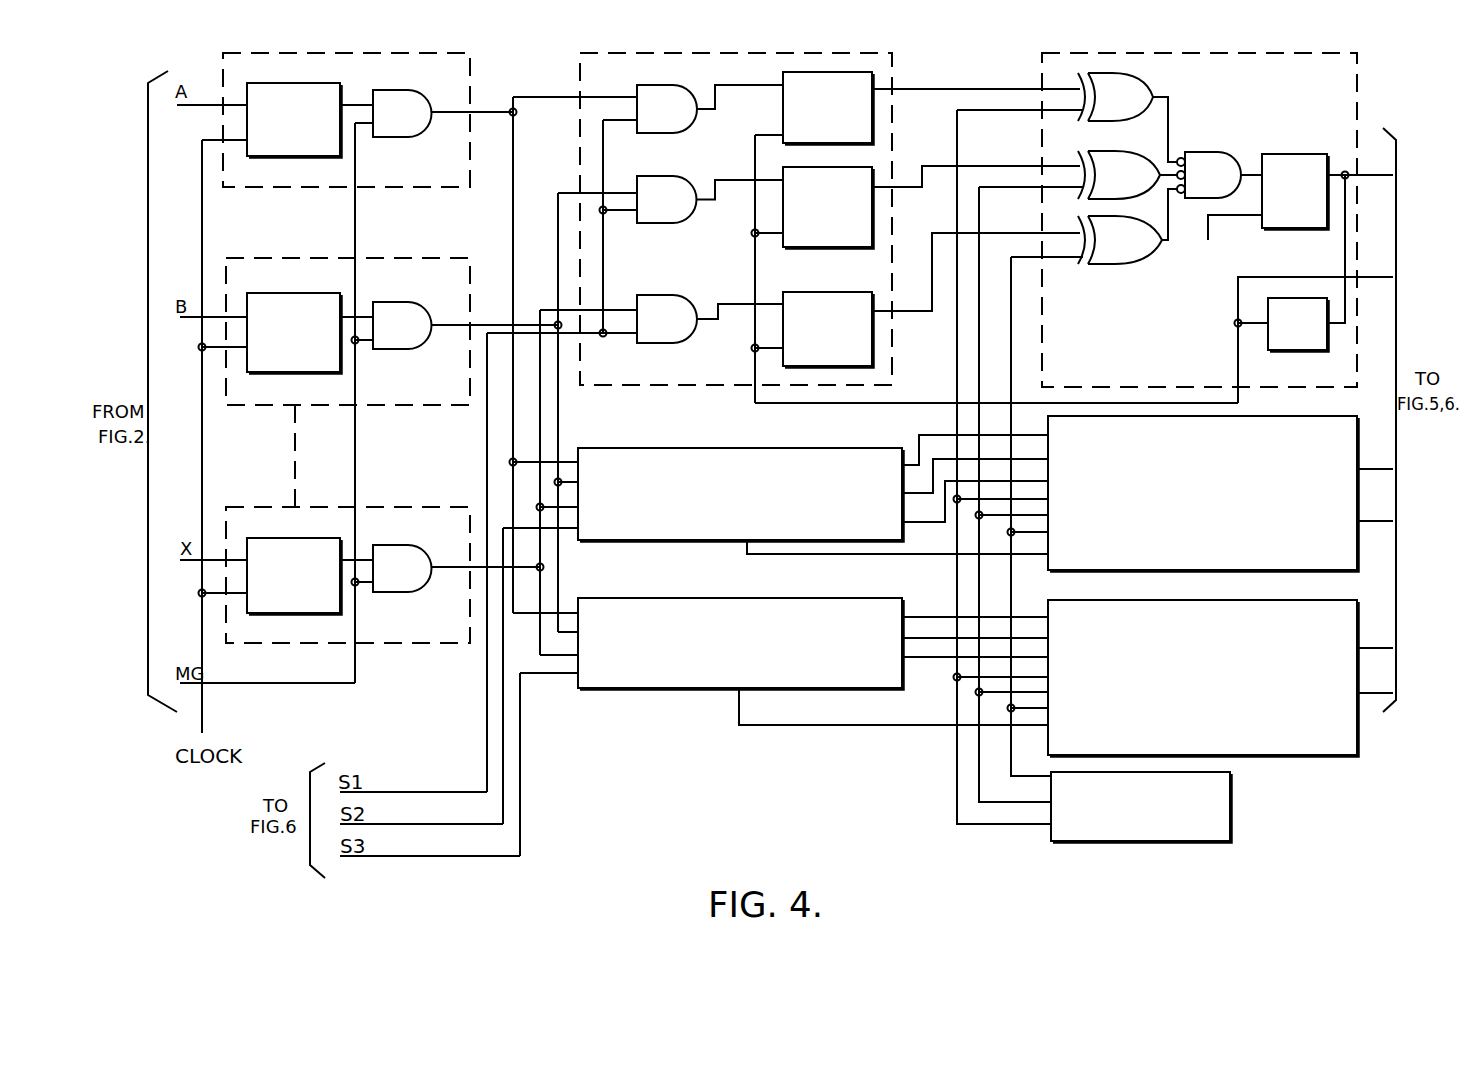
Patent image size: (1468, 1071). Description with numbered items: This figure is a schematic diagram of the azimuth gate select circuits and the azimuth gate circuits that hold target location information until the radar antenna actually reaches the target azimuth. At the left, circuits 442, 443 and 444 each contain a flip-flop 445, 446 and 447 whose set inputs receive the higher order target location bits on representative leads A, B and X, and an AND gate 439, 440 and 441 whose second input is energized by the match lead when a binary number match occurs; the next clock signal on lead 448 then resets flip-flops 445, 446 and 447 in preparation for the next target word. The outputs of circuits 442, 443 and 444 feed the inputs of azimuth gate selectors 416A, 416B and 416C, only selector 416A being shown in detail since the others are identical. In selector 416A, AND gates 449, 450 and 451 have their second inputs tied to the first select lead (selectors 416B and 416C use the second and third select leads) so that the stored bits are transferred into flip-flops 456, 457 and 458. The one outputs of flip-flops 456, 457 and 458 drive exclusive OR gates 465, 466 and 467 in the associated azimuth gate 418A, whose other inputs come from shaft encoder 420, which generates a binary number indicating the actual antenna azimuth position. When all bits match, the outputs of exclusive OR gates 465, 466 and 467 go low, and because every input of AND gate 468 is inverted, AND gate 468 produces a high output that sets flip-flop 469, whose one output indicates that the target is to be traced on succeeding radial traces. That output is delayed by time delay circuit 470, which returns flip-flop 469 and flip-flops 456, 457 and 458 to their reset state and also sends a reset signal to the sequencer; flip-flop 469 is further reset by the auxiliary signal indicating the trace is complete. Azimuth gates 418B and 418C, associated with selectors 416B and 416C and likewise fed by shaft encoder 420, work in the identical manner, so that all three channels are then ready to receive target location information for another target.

The azimuth gate selector 416A is at (862, 53).
The azimuth gate selector 416B is at (782, 448).
The azimuth gate selector 416C is at (792, 597).
The azimuth gate 418A is at (1260, 52).
The azimuth gate 418B is at (1260, 415).
The azimuth gate 418C is at (1253, 597).
The shaft encoder 420 is at (1231, 794).
The AND gate 439 is at (400, 90).
The AND gate 440 is at (393, 302).
The AND gate 441 is at (403, 545).
The circuit 442 is at (418, 52).
The circuit 443 is at (403, 257).
The circuit 444 is at (398, 507).
The flip-flop 445 is at (295, 83).
The flip-flop 446 is at (283, 293).
The flip-flop 447 is at (285, 538).
The lead 448 is at (205, 722).
The AND gate 449 is at (695, 113).
The AND gate 450 is at (663, 175).
The AND gate 451 is at (655, 295).
The flip-flop 456 is at (828, 145).
The flip-flop 457 is at (820, 248).
The flip-flop 458 is at (862, 285).
The exclusive OR gate 465 is at (1105, 120).
The exclusive OR gate 466 is at (1120, 148).
The exclusive OR gate 467 is at (1113, 215).
The AND gate 468 is at (1212, 150).
The flip-flop 469 is at (1283, 153).
The time delay circuit 470 is at (1278, 298).